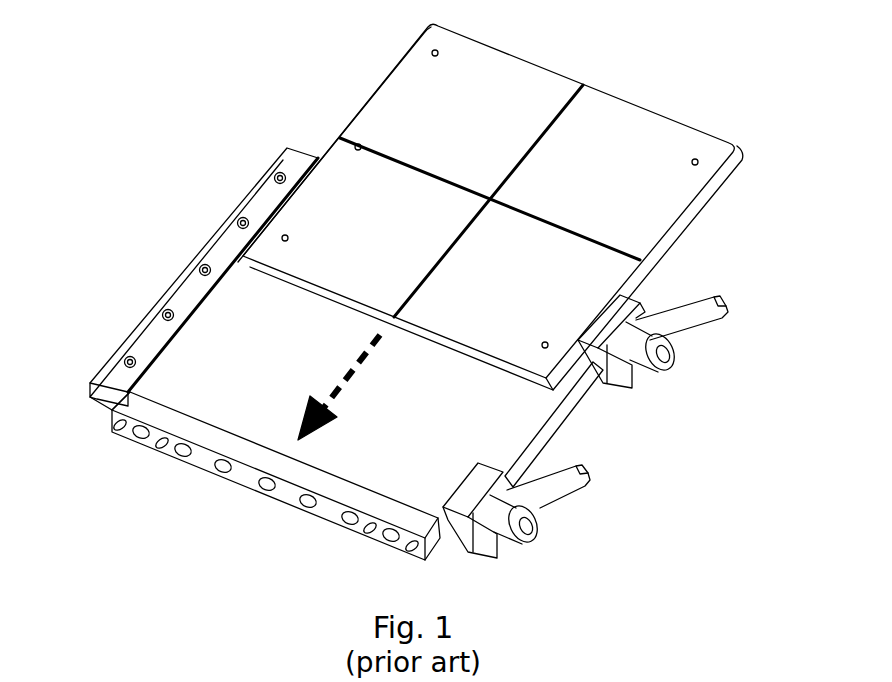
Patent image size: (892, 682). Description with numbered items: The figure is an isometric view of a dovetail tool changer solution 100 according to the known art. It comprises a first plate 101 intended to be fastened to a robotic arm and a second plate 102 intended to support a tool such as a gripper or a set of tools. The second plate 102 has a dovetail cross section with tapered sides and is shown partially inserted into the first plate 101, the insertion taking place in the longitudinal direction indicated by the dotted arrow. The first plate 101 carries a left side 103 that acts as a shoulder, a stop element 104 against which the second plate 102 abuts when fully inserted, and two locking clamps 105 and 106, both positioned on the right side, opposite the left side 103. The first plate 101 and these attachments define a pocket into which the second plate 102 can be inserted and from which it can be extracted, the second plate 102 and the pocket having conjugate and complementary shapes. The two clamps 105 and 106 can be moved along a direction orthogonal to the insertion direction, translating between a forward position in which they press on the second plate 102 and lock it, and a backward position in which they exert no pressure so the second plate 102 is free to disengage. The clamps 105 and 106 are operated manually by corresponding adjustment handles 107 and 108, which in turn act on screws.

The dovetail tool changer solution 100 is at (175, 175).
The first plate 101 is at (247, 473).
The second plate 102 is at (620, 138).
The left side 103 is at (147, 340).
The stop element 104 is at (295, 487).
The locking clamp 105 is at (620, 370).
The locking clamp 106 is at (498, 472).
The adjustment handle 107 is at (717, 318).
The adjustment handle 108 is at (547, 517).